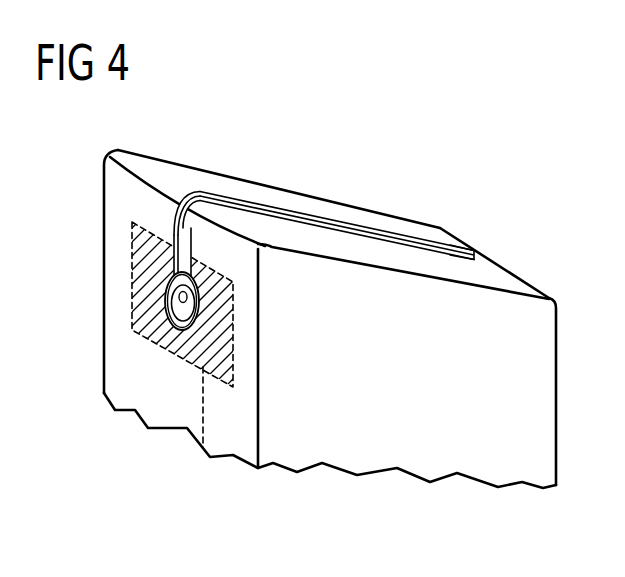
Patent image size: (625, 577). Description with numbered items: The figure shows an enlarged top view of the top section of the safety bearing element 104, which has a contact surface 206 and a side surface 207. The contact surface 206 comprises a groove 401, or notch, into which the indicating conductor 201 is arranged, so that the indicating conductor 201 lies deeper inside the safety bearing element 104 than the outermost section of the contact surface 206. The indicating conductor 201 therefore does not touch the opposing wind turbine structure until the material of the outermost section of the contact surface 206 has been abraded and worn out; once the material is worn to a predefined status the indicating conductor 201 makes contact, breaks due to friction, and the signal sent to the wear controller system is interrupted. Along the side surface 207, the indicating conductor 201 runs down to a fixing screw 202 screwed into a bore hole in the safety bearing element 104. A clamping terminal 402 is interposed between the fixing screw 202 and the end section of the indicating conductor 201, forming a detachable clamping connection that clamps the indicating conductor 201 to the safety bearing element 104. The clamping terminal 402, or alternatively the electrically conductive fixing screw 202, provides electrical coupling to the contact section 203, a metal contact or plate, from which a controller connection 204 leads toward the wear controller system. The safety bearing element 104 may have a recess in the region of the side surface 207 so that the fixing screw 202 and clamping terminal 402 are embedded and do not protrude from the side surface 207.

The safety bearing element 104 is at (422, 468).
The indicating conductor 201 is at (370, 228).
The fixing screw 202 is at (188, 305).
The contact section 203 is at (143, 292).
The controller connection 204 is at (203, 408).
The contact surface 206 is at (273, 184).
The side surface 207 is at (117, 345).
The groove 401 is at (441, 231).
The clamping terminal 402 is at (183, 250).